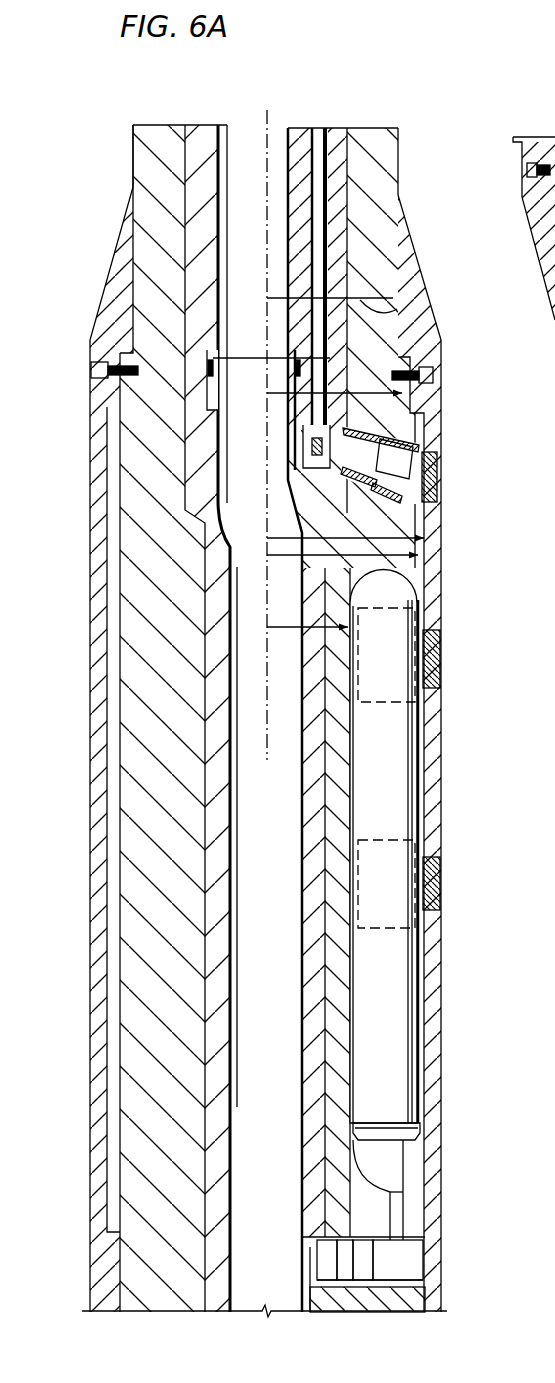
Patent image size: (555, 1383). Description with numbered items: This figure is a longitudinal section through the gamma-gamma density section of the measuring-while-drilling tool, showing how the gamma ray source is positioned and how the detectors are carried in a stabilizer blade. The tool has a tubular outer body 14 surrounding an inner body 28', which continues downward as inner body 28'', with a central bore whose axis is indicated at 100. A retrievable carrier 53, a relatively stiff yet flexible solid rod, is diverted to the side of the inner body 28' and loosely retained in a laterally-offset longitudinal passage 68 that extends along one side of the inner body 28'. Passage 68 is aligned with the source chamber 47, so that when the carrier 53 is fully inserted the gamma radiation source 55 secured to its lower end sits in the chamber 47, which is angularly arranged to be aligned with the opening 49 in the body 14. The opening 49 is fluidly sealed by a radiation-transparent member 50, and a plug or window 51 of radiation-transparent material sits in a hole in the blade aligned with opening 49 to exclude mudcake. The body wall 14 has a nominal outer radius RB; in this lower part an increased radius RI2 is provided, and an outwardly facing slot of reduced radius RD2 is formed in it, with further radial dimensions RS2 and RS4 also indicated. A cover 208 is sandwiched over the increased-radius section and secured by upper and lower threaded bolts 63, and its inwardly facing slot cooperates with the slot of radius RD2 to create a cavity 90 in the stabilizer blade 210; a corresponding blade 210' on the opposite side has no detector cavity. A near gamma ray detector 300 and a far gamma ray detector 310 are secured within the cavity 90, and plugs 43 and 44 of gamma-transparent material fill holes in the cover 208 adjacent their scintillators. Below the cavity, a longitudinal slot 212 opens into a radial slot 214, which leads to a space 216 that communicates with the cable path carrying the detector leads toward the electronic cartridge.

The tubular outer body 14 is at (387, 172).
The inner body 28' is at (380, 720).
The inner body 28'' is at (404, 902).
The plug 43 is at (440, 670).
The plug 44 is at (440, 890).
The source chamber 47 is at (300, 431).
The opening 49 is at (410, 430).
The radiation-transparent member 50 is at (433, 492).
The plug or window 51 is at (437, 463).
The retrievable carrier 53 is at (320, 258).
The gamma radiation source 55 is at (320, 445).
The threaded bolts 63 is at (434, 375).
The laterally-offset longitudinal passage 68 is at (330, 150).
The cavity 90 is at (405, 597).
The central axis 100 is at (267, 253).
The cover 208 is at (433, 1018).
The stabilizer blade 210 is at (485, 826).
The stabilizer blade 210' is at (83, 718).
The longitudinal slot 212 is at (404, 1203).
The radial slot 214 is at (412, 1263).
The space 216 is at (320, 1302).
The near gamma ray detector 300 is at (395, 638).
The far gamma ray detector 310 is at (395, 860).
The nominal outer radius RB is at (397, 308).
The increased radius RI2 is at (443, 338).
The radius S2 RS2 is at (433, 540).
The radius S4 RS4 is at (428, 557).
The reduced radius RD2 is at (285, 628).